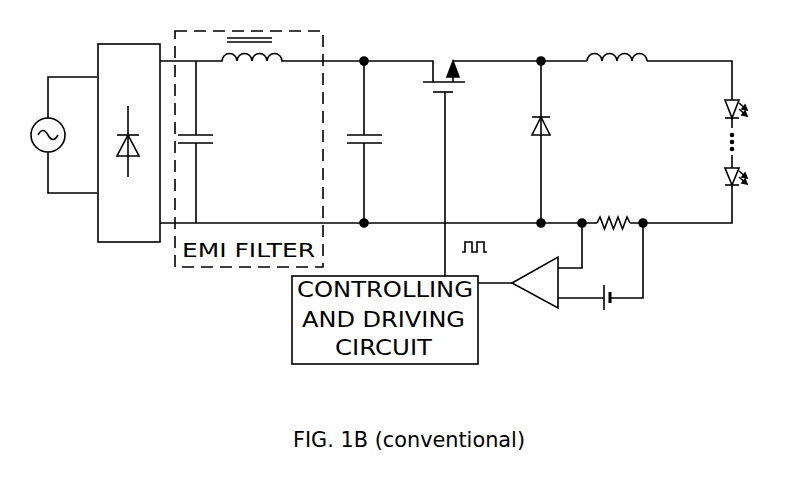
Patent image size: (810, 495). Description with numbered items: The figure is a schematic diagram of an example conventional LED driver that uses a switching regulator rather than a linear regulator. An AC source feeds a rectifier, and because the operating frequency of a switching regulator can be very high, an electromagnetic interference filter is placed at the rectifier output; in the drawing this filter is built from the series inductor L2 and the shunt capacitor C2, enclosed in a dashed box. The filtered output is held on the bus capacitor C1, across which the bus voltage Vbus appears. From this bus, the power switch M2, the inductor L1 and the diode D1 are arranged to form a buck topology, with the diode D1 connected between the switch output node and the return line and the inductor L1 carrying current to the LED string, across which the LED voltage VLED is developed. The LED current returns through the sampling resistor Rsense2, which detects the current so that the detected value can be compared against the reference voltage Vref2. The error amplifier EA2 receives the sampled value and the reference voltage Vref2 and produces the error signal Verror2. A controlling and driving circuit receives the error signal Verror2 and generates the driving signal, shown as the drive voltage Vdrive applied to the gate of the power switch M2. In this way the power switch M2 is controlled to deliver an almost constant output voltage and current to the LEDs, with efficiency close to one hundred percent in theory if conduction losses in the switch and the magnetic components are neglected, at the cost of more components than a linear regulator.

The EMI filter inductor L2 is at (258, 61).
The EMI filter capacitor C2 is at (204, 146).
The bus capacitor C1 is at (360, 145).
The bus voltage Vbus is at (409, 143).
The power switch M2 is at (424, 60).
The drive voltage Vdrive is at (445, 190).
The diode D1 is at (536, 122).
The inductor L1 is at (607, 55).
The sampling resistor Rsense2 is at (617, 205).
The LED string voltage VLED is at (709, 144).
The error amplifier EA2 is at (538, 268).
The reference voltage Vref2 is at (607, 311).
The error signal Verror2 is at (500, 283).